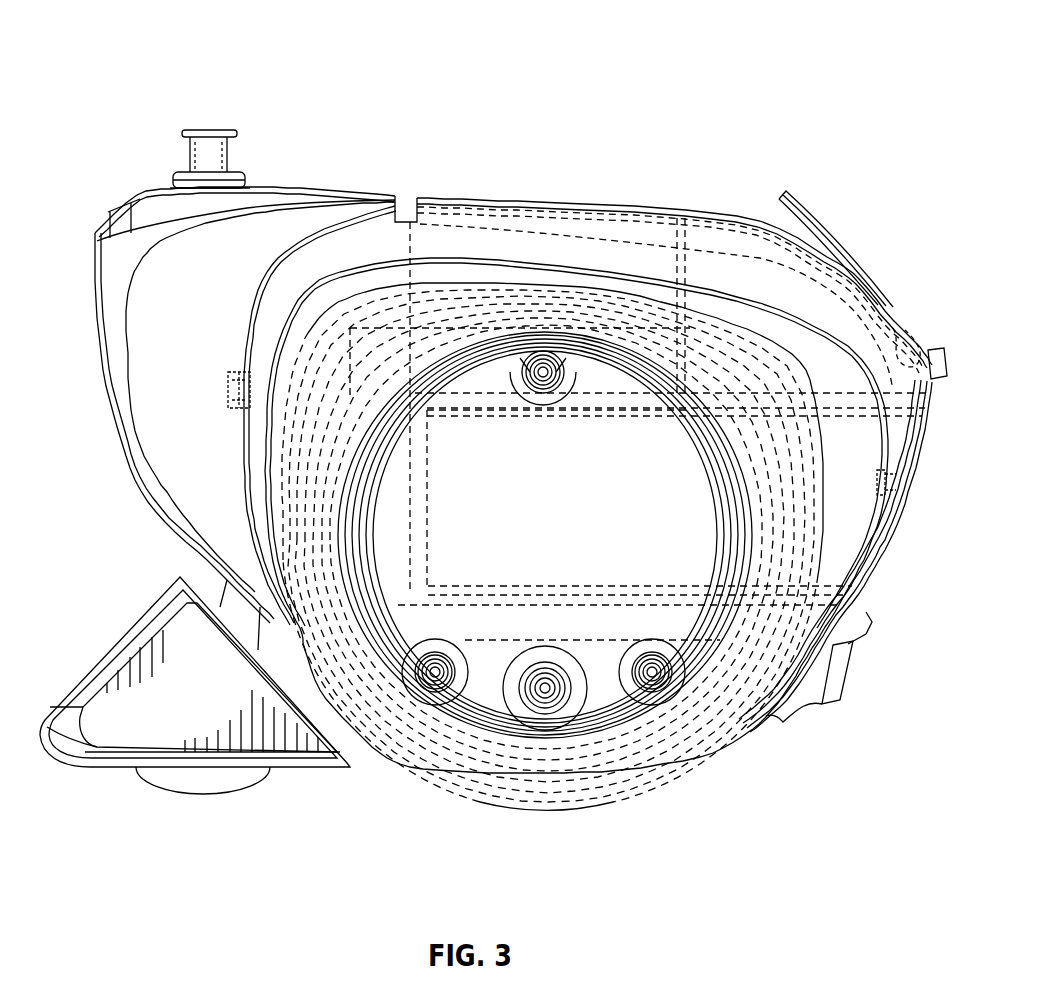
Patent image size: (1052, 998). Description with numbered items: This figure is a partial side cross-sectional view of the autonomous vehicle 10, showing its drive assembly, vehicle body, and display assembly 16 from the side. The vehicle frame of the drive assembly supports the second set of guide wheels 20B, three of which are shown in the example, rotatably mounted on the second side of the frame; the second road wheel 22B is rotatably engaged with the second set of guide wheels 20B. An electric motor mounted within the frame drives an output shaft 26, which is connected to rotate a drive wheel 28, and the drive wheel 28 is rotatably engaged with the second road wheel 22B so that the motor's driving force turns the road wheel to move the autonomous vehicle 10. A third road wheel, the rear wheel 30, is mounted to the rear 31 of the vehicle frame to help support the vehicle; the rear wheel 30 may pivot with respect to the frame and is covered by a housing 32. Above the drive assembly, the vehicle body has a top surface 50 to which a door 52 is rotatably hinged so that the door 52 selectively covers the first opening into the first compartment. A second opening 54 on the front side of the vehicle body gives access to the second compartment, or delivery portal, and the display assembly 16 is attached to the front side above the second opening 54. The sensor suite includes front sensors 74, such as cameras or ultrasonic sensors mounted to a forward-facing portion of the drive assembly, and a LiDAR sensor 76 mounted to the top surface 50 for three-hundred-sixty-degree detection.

The autonomous vehicle 10 is at (826, 54).
The display assembly 16 is at (828, 240).
The second set of guide wheels 20B is at (570, 402).
The second road wheel 22B is at (622, 798).
The output shaft 26 is at (545, 690).
The drive wheel 28 is at (543, 648).
The rear wheel 30 is at (203, 793).
The rear 31 is at (122, 411).
The housing 32 is at (107, 637).
The top surface 50 is at (365, 199).
The door 52 is at (560, 200).
The second opening 54 is at (894, 538).
The front sensors 74 is at (817, 667).
The LiDAR sensor 76 is at (230, 153).